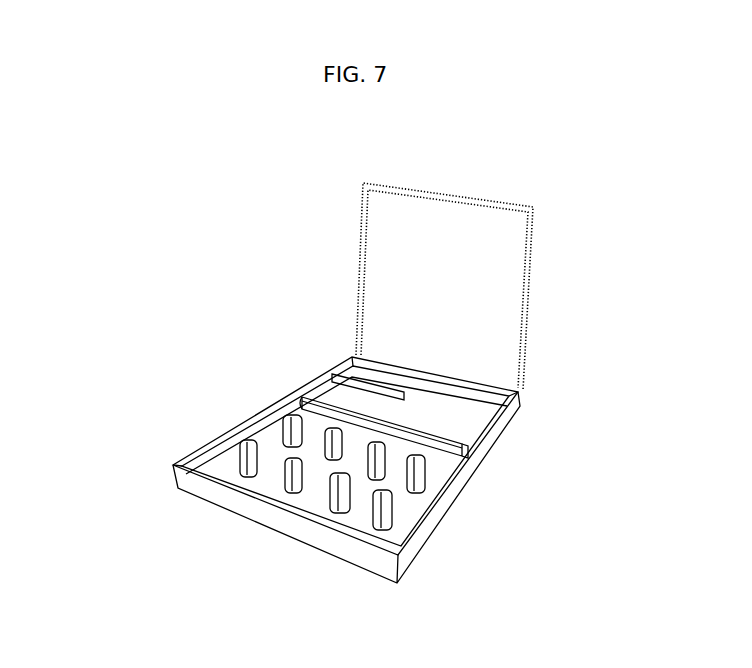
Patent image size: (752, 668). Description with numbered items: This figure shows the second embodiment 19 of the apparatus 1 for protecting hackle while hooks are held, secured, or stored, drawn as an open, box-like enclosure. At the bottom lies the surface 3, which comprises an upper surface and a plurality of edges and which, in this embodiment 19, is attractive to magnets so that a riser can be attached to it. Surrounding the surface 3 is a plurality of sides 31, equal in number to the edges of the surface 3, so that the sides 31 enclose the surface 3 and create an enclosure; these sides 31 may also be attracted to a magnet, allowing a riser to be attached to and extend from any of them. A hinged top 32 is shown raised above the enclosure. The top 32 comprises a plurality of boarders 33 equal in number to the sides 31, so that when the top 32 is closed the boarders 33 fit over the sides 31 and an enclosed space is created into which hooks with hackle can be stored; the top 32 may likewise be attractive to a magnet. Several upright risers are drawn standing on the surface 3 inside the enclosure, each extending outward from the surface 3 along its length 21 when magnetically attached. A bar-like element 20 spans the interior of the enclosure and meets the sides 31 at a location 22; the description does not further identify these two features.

The apparatus 1 is at (183, 176).
The second embodiment 19 is at (394, 371).
The surface 3 is at (332, 472).
The divider bar 20 is at (330, 404).
The length 21 is at (397, 429).
The divider end 22 is at (462, 455).
The plurality of sides 31 is at (467, 489).
The top 32 is at (444, 286).
The plurality of boarders 33 is at (497, 199).